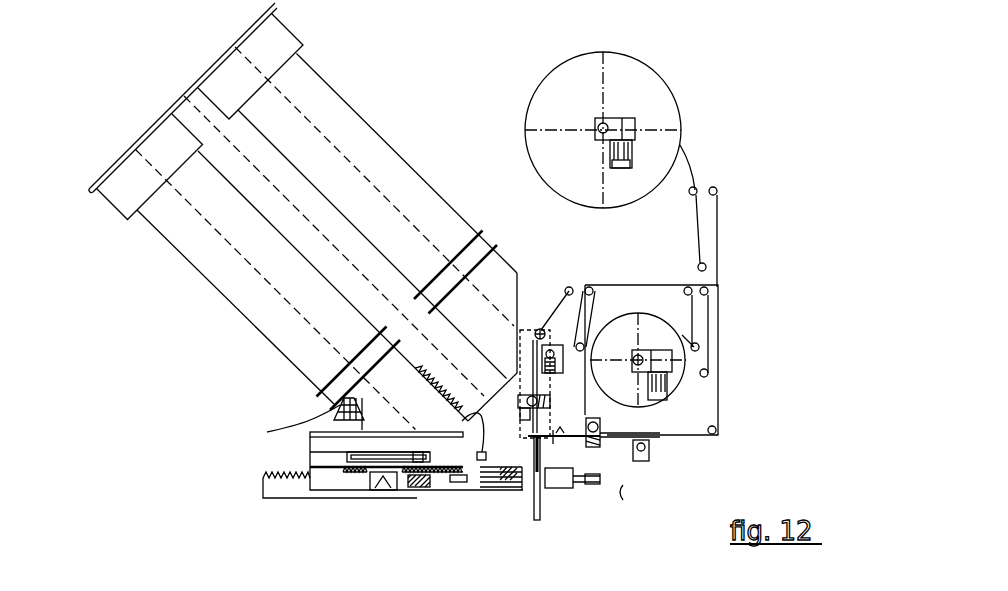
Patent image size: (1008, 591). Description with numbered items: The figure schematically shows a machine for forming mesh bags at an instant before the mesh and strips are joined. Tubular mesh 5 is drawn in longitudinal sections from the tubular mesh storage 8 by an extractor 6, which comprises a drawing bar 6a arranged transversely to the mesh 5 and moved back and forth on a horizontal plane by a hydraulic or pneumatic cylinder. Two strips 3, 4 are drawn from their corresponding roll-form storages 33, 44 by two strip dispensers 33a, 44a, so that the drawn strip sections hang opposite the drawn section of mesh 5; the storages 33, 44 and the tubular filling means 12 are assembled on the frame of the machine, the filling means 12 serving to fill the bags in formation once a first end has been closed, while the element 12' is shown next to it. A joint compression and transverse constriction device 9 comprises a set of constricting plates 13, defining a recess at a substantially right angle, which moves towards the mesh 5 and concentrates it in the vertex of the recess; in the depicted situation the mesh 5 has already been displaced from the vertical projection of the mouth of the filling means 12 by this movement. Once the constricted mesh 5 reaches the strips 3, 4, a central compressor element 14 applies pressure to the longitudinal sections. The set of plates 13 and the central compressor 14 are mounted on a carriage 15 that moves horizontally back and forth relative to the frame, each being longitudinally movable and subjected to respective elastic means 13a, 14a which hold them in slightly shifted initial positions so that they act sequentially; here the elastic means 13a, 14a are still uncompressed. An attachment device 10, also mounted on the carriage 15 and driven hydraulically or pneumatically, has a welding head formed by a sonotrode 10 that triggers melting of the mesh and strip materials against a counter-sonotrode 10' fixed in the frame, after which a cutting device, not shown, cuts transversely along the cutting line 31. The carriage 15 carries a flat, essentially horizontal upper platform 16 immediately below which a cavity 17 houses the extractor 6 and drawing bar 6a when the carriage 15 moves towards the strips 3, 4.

The tubular filling means 12 is at (327, 238).
The last article of stack 12' is at (407, 164).
The storage 44 is at (655, 88).
The strip 3 is at (556, 297).
The storage 33 is at (615, 330).
The strip dispenser 33a is at (552, 372).
The strip 4 is at (722, 413).
The strip dispenser 44a is at (603, 424).
The mesh 5 is at (470, 417).
The drawing bar 6a is at (486, 452).
The tubular mesh storage 8 is at (308, 429).
The upper platform 16 is at (310, 442).
The cavity 17 is at (322, 458).
The elastic means 13a is at (287, 483).
The carriage 15 is at (347, 503).
The extractor 6 is at (358, 463).
The joint compression and transverse constriction device 9 is at (446, 503).
The central compressor element 14 is at (457, 490).
The elastic means 14a is at (468, 487).
The set of constricting plates 13 is at (500, 490).
The attachment device 10 is at (555, 507).
The counter-sonotrode 10' is at (572, 502).
The cutting line 31 is at (639, 498).